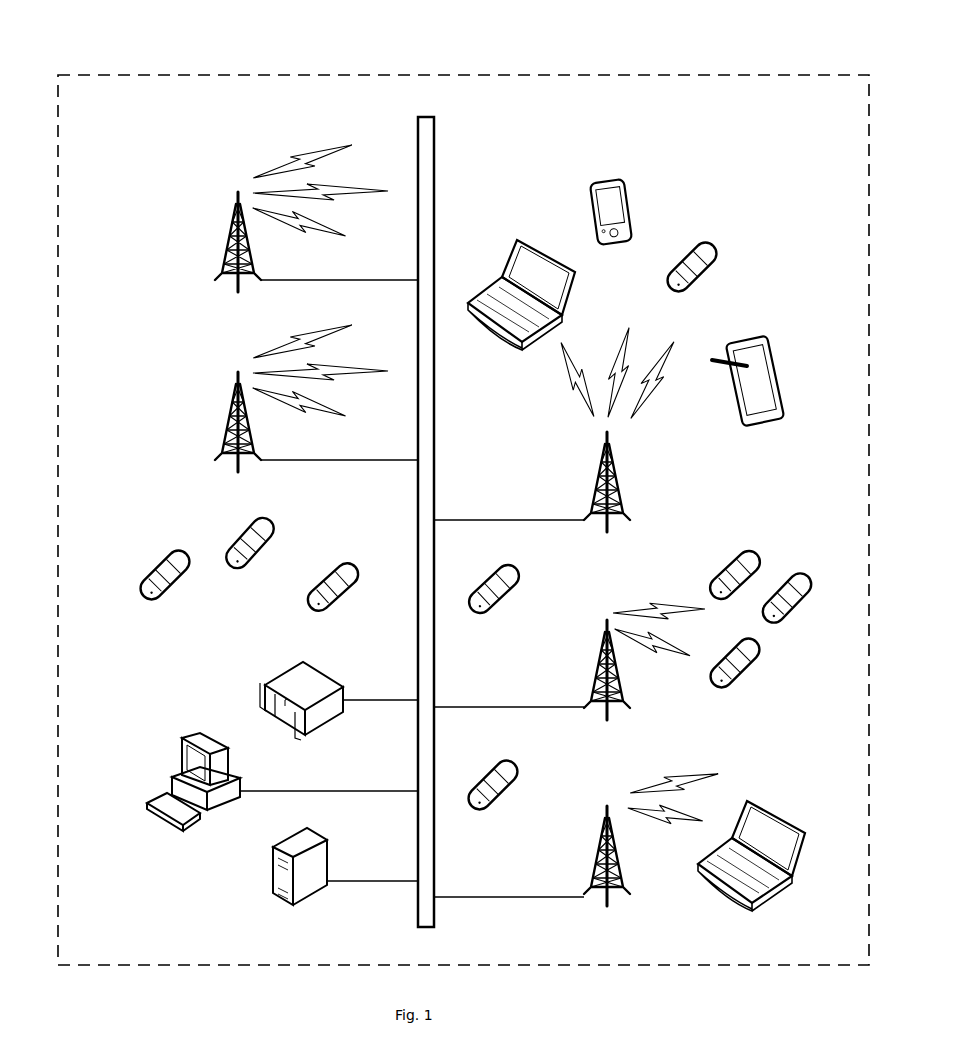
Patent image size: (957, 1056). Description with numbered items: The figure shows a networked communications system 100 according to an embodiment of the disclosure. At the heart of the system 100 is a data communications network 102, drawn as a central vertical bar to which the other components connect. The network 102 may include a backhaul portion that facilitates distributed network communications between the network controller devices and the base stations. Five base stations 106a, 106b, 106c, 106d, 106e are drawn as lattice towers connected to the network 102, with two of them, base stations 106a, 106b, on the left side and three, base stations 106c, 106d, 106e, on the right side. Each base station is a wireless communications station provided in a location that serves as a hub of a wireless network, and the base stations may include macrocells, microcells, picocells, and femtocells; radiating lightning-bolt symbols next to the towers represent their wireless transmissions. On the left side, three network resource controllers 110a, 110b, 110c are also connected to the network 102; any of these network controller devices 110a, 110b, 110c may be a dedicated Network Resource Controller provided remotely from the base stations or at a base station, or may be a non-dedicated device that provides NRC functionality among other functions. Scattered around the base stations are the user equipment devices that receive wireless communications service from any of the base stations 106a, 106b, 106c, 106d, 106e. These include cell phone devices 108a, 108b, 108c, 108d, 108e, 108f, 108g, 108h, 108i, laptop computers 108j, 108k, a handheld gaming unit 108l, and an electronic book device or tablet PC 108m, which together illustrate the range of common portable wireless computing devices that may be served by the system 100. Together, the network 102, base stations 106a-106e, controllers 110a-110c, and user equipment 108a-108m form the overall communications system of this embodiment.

The networked communications system 100 is at (328, 52).
The data communications network 102 is at (418, 130).
The base station 106a is at (228, 238).
The base station 106b is at (228, 418).
The base station 106c is at (597, 848).
The base station 106d is at (597, 668).
The base station 106e is at (622, 490).
The cell phone device 108a is at (152, 570).
The cell phone device 108b is at (245, 528).
The cell phone device 108c is at (318, 612).
The cell phone device 108d is at (518, 768).
The cell phone device 108e is at (745, 680).
The cell phone device 108f is at (800, 610).
The cell phone device 108g is at (757, 555).
The cell phone device 108h is at (518, 570).
The cell phone device 108i is at (718, 249).
The laptop computer 108j is at (770, 808).
The laptop computer 108k is at (517, 240).
The handheld gaming unit 108l is at (638, 200).
The electronic book device or tablet PC 108m is at (775, 346).
The network resource controller 110a is at (255, 698).
The network resource controller 110b is at (178, 740).
The network resource controller 110c is at (272, 887).